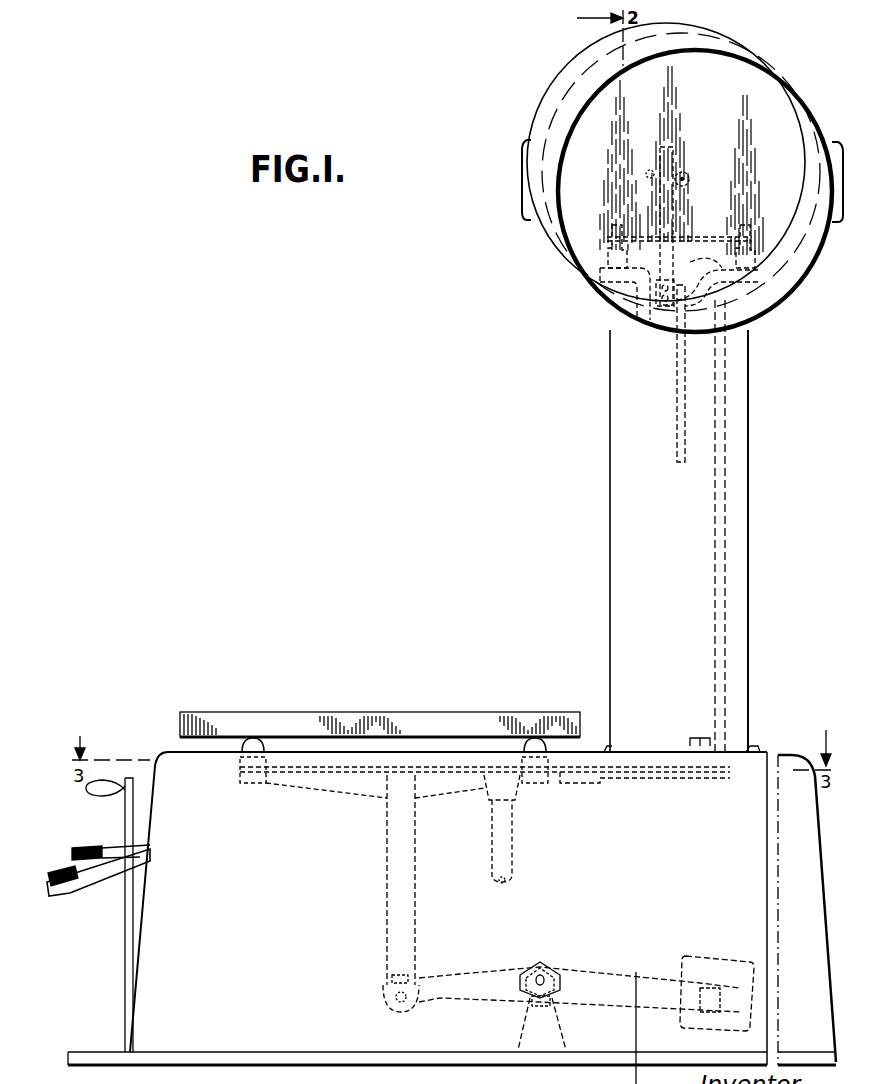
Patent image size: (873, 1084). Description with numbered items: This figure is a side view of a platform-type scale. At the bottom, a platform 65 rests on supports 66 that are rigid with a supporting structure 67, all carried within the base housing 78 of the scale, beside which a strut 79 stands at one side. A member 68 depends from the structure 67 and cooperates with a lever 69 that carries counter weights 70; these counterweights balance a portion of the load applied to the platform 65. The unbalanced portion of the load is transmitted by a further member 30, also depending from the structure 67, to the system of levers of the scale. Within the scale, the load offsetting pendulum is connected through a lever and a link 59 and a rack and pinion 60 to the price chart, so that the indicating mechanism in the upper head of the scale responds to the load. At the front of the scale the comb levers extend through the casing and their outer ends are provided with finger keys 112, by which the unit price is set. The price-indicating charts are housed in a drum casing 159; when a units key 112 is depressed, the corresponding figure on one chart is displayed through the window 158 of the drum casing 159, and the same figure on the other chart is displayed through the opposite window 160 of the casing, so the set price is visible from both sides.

The drum casing 159 is at (578, 67).
The window 158 is at (522, 178).
The opposite window 160 is at (838, 160).
The rack and pinion 60 is at (684, 187).
The link 59 is at (677, 416).
The platform 65 is at (385, 712).
The base housing 78 is at (185, 760).
The supports 66 is at (248, 757).
The supporting structure 67 is at (342, 790).
The member 68 is at (387, 890).
The member 30 is at (510, 855).
The lever 69 is at (466, 976).
The counter weights 70 is at (722, 964).
The strut 79 is at (125, 922).
The finger keys 112 is at (62, 876).